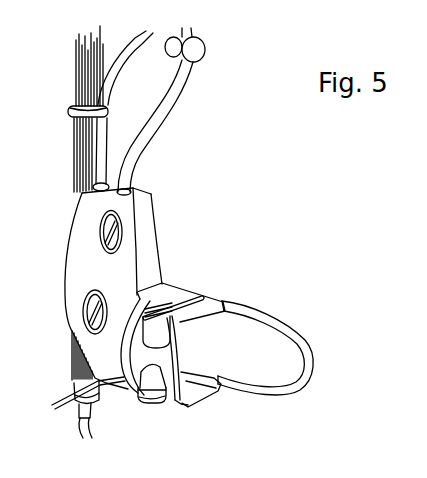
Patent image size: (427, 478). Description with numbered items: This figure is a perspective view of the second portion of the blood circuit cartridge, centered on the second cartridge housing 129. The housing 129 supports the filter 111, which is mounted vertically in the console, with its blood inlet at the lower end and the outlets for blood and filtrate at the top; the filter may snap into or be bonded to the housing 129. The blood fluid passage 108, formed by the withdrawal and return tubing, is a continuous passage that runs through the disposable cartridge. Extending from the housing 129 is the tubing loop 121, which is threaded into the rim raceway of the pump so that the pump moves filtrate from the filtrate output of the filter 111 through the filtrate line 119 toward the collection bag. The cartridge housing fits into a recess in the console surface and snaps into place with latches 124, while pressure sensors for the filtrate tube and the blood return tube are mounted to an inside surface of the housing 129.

The filter 111 is at (90, 44).
The blood fluid passage 108 is at (104, 101).
The filtrate line 119 is at (123, 178).
The second cartridge housing 129 is at (150, 250).
The tubing loop 121 is at (313, 350).
The latches 124 is at (145, 398).